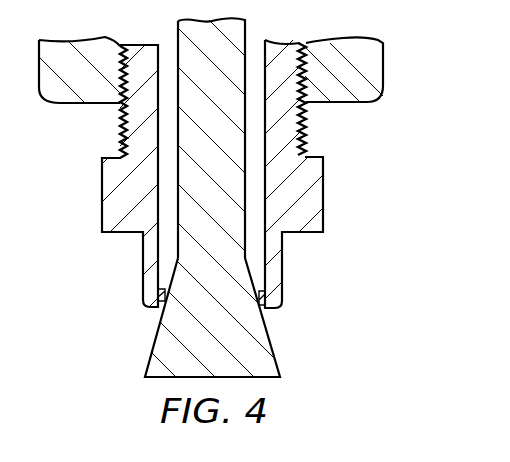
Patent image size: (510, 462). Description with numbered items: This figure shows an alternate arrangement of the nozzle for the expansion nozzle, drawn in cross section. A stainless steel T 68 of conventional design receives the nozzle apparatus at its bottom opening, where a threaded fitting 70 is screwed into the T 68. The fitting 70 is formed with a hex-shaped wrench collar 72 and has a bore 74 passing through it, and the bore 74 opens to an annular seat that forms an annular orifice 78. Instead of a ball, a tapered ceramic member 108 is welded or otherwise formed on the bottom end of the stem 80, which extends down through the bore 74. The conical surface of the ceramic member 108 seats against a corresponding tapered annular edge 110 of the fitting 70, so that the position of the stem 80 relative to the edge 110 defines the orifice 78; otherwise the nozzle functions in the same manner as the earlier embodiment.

The T 68 is at (384, 65).
The fitting 70 is at (312, 126).
The hex-shaped wrench collar 72 is at (102, 213).
The bore 74 is at (304, 189).
The annular orifice 78 is at (270, 318).
The stem 80 is at (176, 46).
The tapered ceramic member 108 is at (277, 358).
The tapered annular edge 110 is at (158, 325).